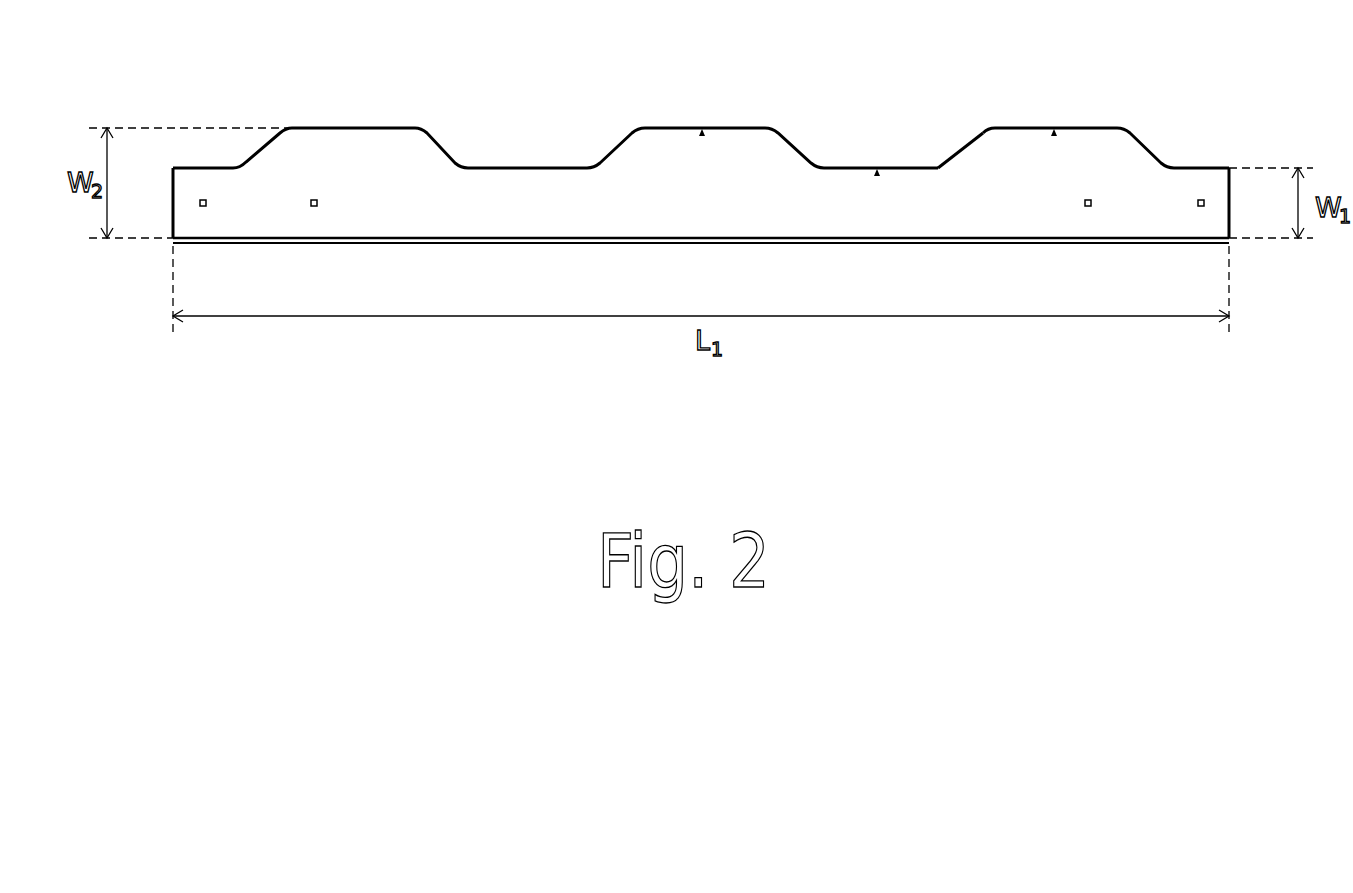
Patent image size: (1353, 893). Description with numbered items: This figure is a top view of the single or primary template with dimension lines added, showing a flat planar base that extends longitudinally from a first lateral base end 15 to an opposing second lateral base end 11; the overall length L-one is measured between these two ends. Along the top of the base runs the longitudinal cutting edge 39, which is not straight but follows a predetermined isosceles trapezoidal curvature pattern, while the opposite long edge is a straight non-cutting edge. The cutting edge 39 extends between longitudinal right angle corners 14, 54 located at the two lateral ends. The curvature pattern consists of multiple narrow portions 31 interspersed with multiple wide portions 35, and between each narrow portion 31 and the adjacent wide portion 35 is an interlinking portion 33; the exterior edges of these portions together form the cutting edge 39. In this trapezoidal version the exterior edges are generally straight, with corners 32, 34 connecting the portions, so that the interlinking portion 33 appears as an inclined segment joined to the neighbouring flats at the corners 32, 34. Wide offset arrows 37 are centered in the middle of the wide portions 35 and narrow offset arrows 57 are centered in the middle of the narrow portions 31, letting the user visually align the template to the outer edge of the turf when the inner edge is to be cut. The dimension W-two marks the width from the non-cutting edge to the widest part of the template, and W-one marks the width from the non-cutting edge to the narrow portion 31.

The second lateral base end 11 is at (173, 204).
The longitudinal right angle corner 14 is at (1229, 168).
The first lateral base end 15 is at (1229, 200).
The narrow portion 31 is at (855, 160).
The corner 32 is at (978, 135).
The interlinking portion 33 is at (965, 137).
The corner 34 is at (938, 167).
The wide portion 35 is at (1052, 115).
The wide offset arrow 37 is at (350, 133).
The longitudinal cutting edge 39 is at (775, 131).
The longitudinal right angle corner 54 is at (173, 168).
The narrow offset arrow 57 is at (525, 169).